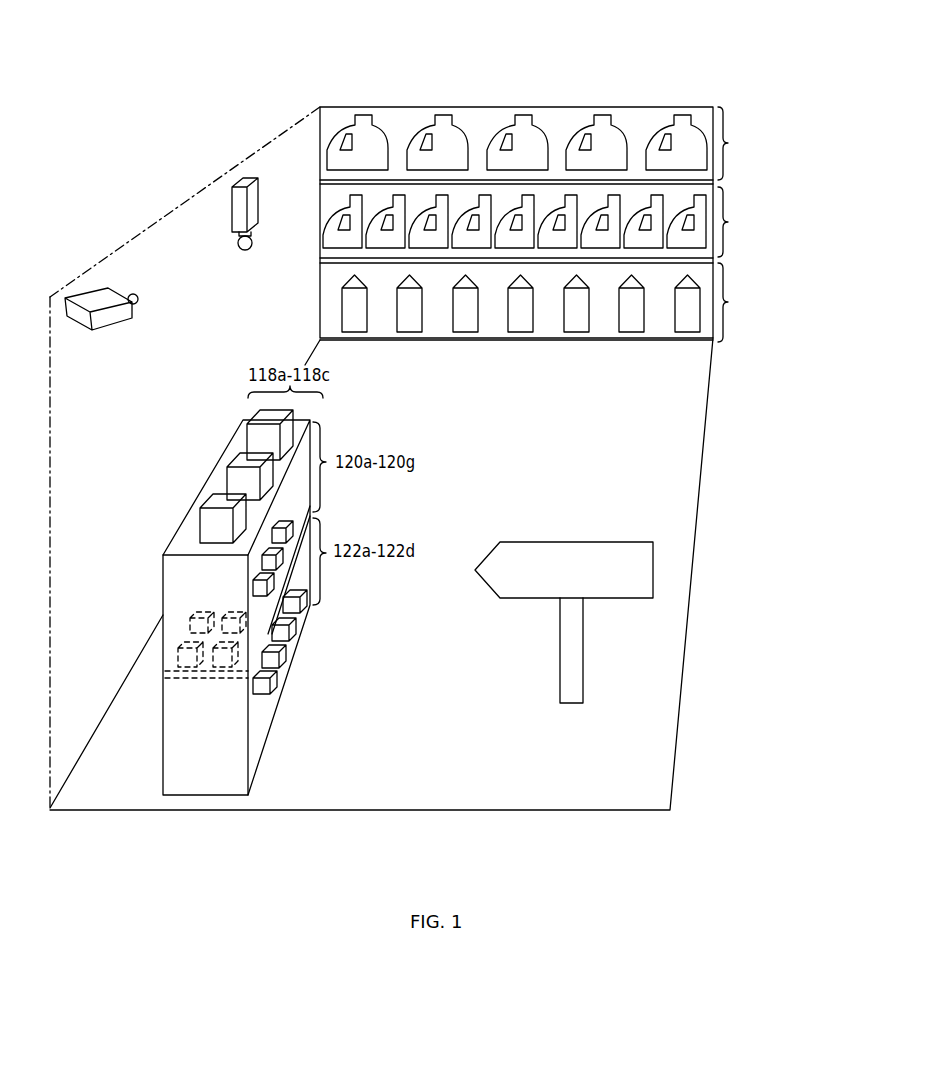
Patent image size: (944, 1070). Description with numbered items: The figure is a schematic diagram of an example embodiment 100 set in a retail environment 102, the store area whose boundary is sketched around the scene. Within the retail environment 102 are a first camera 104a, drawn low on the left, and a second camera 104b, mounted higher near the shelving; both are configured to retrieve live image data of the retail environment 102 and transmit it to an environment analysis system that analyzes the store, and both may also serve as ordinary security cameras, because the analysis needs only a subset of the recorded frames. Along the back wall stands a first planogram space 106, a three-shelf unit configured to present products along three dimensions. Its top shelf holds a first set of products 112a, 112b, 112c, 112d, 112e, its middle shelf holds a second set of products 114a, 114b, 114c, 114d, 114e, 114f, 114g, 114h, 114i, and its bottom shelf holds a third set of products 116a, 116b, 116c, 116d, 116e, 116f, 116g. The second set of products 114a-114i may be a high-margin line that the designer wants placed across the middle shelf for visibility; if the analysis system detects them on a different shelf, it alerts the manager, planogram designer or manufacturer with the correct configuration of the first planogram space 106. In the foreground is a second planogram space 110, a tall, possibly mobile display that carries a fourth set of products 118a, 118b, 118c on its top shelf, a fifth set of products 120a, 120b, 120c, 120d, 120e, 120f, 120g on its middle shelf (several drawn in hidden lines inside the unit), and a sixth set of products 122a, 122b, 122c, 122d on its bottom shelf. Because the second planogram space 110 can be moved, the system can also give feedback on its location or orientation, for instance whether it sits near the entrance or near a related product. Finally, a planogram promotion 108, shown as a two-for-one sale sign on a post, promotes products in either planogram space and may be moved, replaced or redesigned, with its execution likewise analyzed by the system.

The example embodiment 100 is at (197, 38).
The retail environment 102 is at (145, 228).
The first camera 104a is at (105, 298).
The second camera 104b is at (232, 205).
The first planogram space 106 is at (713, 352).
The planogram promotion 108 is at (557, 542).
The second planogram space 110 is at (193, 788).
The first set of products 112a is at (333, 135).
The first set of products 112b is at (420, 145).
The first set of products 112c is at (513, 127).
The first set of products 112d is at (605, 125).
The first set of products 112e is at (700, 125).
The second set of products 114a is at (328, 243).
The second set of products 114b is at (375, 236).
The second set of products 114c is at (415, 232).
The second set of products 114d is at (465, 213).
The second set of products 114e is at (505, 213).
The second set of products 114f is at (560, 212).
The second set of products 114g is at (617, 212).
The second set of products 114h is at (655, 212).
The second set of products 114i is at (690, 212).
The third set of products 116a is at (342, 320).
The third set of products 116b is at (397, 315).
The third set of products 116c is at (450, 307).
The third set of products 116d is at (505, 318).
The third set of products 116e is at (561, 318).
The third set of products 116f is at (616, 318).
The third set of products 116g is at (672, 318).
The fourth set of products 118a is at (215, 503).
The fourth set of products 118b is at (240, 460).
The fourth set of products 118c is at (262, 415).
The fifth set of products 120a is at (290, 528).
The fifth set of products 120b is at (270, 557).
The fifth set of products 120c is at (255, 590).
The fifth set of products 120d is at (193, 623).
The fifth set of products 120e is at (213, 672).
The fifth set of products 120f is at (177, 660).
The fifth set of products 120g is at (220, 615).
The sixth set of products 122a is at (300, 605).
The sixth set of products 122b is at (290, 632).
The sixth set of products 122c is at (280, 660).
The sixth set of products 122d is at (271, 686).